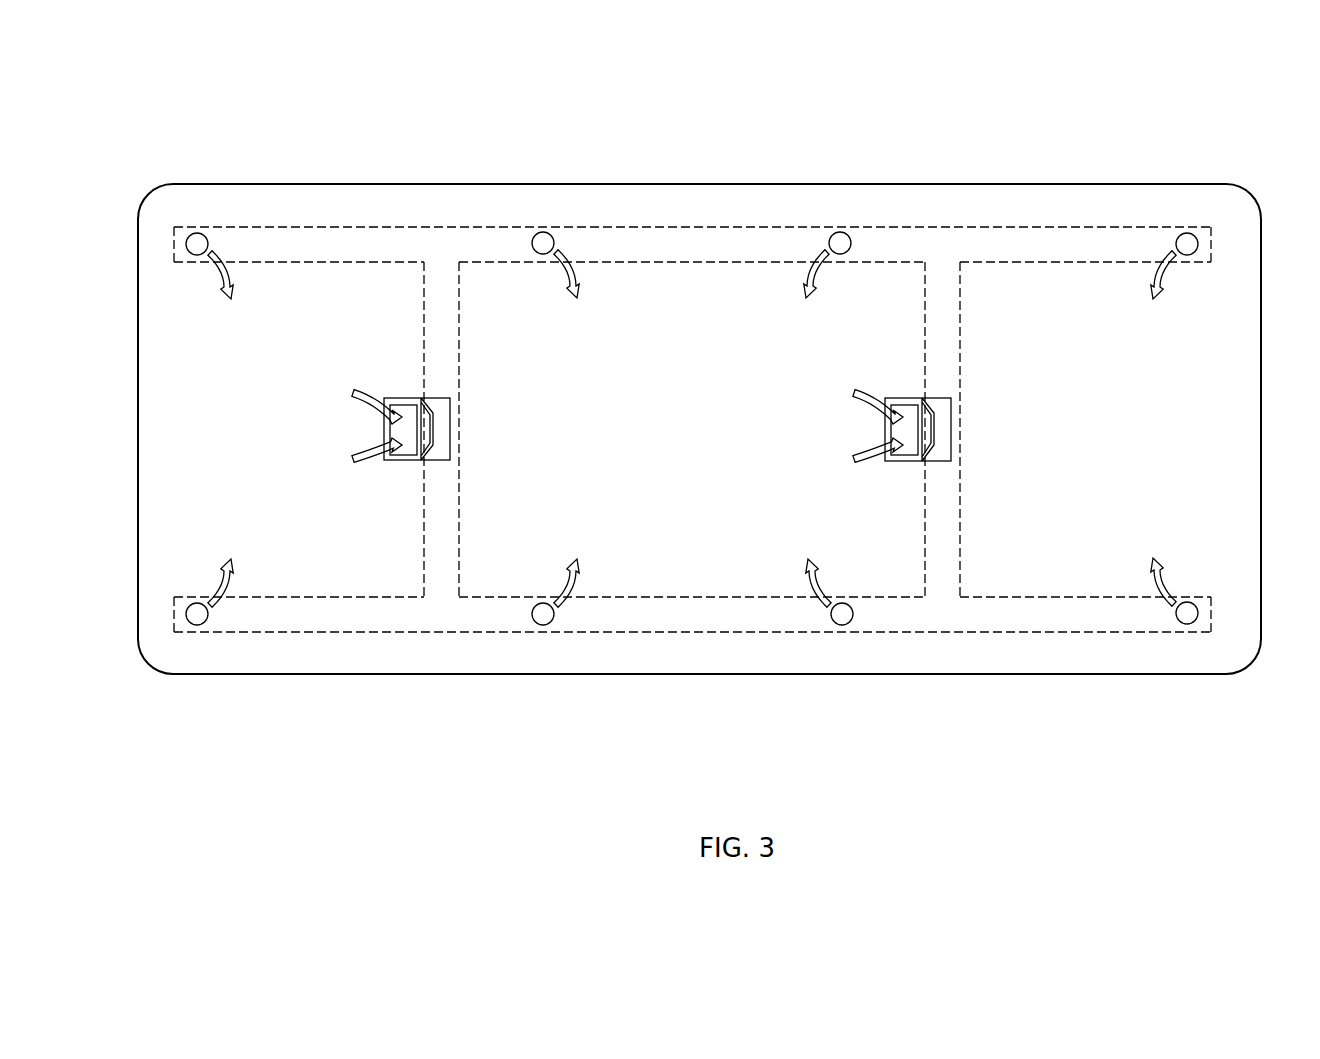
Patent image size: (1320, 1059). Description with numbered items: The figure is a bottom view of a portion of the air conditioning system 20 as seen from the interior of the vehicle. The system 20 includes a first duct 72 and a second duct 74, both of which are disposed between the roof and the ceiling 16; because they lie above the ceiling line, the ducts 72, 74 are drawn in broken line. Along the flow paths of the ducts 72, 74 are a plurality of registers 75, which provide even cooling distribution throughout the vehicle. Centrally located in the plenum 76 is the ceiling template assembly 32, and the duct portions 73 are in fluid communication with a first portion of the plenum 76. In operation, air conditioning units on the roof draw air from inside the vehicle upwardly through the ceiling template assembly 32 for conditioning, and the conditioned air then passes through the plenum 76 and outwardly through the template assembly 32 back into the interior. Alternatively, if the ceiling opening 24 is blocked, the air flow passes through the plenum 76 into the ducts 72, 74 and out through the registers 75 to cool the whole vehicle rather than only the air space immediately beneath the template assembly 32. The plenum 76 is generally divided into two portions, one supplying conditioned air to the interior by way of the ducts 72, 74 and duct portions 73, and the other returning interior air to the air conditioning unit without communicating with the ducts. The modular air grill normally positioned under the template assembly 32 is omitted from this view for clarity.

The ceiling 16 is at (1099, 200).
The air conditioning system 20 is at (886, 88).
The ceiling opening 24 is at (438, 397).
The ceiling template assembly 32 is at (399, 485).
The first duct 72 is at (994, 232).
The duct portions 73 is at (440, 530).
The second duct 74 is at (1088, 608).
The registers 75 is at (201, 233).
The plenum 76 is at (452, 423).